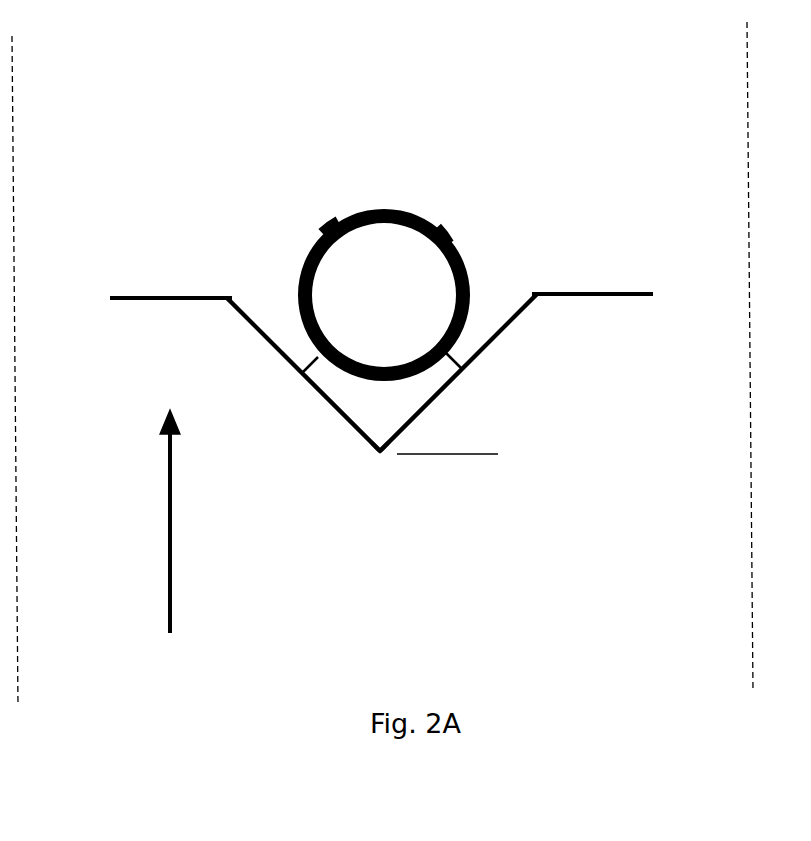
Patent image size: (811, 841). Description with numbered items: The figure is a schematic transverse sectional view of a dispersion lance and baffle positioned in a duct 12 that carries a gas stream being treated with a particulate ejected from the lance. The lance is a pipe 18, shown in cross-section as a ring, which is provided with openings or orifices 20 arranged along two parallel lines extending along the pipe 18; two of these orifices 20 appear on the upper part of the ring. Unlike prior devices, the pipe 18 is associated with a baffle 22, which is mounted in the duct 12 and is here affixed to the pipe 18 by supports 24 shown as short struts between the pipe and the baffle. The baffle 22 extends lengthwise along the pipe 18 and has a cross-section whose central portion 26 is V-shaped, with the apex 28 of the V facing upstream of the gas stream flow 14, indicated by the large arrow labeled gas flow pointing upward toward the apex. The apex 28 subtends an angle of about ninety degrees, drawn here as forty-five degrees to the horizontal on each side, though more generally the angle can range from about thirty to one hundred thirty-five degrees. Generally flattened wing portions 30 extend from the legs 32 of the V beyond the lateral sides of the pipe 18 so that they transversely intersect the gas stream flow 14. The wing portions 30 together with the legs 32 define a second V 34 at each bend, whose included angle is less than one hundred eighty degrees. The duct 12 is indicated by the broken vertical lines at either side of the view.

The duct 12 is at (14, 137).
The gas stream flow 14 is at (165, 574).
The pipe 18 is at (302, 270).
The openings or orifices 20 is at (325, 232).
The baffle 22 is at (480, 381).
The supports 24 is at (300, 366).
The central portion 26 is at (335, 410).
The apex 28 is at (380, 456).
The wing portions 30 is at (150, 308).
The legs 32 is at (245, 318).
The second V 34 is at (227, 296).